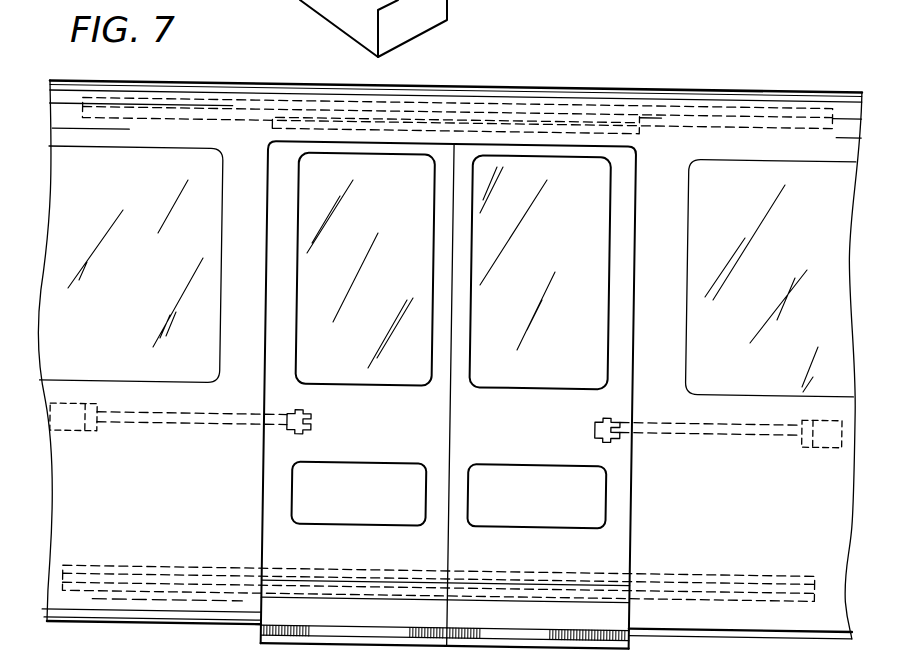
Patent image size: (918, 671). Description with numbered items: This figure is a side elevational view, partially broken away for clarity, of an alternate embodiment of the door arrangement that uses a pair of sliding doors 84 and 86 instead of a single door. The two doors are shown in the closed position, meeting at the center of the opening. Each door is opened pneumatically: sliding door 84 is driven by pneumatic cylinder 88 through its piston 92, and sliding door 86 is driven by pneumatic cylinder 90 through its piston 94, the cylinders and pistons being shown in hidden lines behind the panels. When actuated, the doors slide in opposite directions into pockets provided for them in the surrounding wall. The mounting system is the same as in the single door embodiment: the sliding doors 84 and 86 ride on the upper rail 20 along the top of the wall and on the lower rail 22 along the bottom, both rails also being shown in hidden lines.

The upper rail 20 is at (307, 88).
The lower rail 22 is at (762, 572).
The sliding door 84 is at (367, 558).
The sliding door 86 is at (543, 561).
The pneumatic cylinder 88 is at (72, 432).
The pneumatic cylinder 90 is at (823, 448).
The piston 92 is at (220, 428).
The piston 94 is at (663, 437).